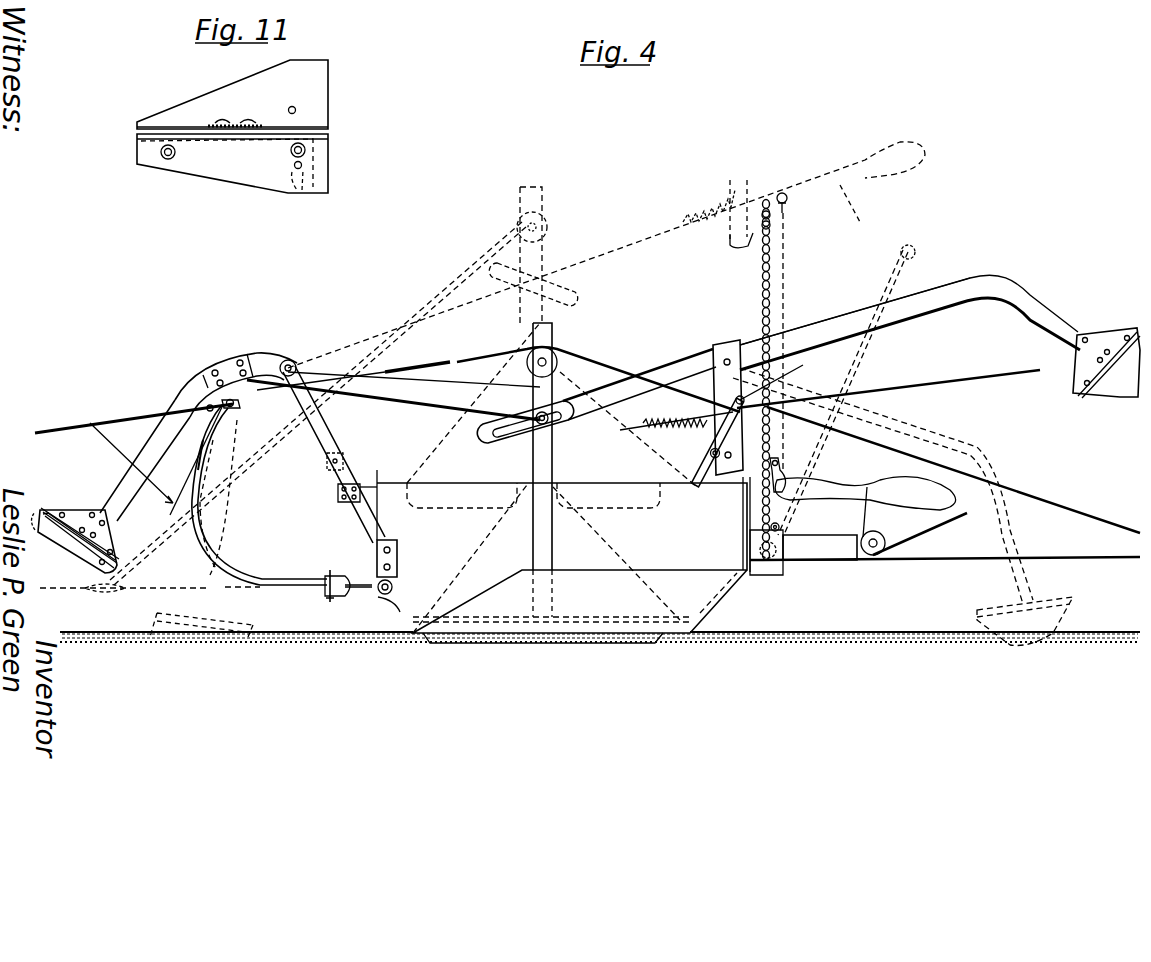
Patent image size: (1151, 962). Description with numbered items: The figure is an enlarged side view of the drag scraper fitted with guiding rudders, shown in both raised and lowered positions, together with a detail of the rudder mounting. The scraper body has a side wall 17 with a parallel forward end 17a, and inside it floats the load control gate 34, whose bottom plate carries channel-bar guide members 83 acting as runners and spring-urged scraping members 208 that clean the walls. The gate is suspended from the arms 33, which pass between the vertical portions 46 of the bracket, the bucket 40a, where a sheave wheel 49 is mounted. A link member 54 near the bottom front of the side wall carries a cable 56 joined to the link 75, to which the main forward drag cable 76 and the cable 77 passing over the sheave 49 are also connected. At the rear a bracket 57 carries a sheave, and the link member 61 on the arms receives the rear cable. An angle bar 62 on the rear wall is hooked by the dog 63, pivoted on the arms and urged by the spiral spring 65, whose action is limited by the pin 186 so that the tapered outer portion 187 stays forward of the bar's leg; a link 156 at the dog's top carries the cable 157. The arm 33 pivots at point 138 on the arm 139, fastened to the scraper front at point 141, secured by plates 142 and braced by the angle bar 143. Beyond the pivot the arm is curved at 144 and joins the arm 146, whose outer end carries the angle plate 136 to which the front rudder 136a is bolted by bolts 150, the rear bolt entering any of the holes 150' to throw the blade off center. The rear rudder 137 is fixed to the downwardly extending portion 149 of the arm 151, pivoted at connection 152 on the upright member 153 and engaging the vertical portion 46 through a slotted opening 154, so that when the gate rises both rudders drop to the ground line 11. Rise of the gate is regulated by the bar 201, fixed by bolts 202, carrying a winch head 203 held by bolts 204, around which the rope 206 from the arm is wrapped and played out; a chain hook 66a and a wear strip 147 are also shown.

In FIG. 4, the ground line 11 is at (90, 423).
In FIG. 4, the side wall 17 is at (598, 504).
In FIG. 4, the parallel forward end of side wall 17a is at (462, 498).
In FIG. 4, the arm 33 is at (480, 316).
In FIG. 4, the load control gate 34 is at (630, 558).
In FIG. 4, the bucket 40a is at (535, 410).
In FIG. 4, the vertical portion of bracket plates 46 is at (545, 188).
In FIG. 4, the sheave wheel 49 is at (548, 236).
In FIG. 4, the link member 54 is at (385, 600).
In FIG. 4, the cable 56 is at (195, 468).
In FIG. 4, the bracket 57 is at (785, 575).
In FIG. 4, the link member 61 is at (786, 193).
In FIG. 4, the angle bar 62 is at (712, 495).
In FIG. 4, the dog 63 is at (690, 140).
In FIG. 4, the spiral spring 65 is at (675, 413).
In FIG. 4, the chain hook 66a is at (762, 205).
In FIG. 4, the link 75 is at (224, 408).
In FIG. 4, the main forward drag cable 76 is at (60, 418).
In FIG. 4, the cable 77 is at (455, 280).
In FIG. 4, the guide members 83 is at (460, 643).
In FIG. 11, the angle plate 136 is at (328, 97).
In FIG. 4, the angle plate 136 is at (62, 512).
In FIG. 4, the front rudder 136a is at (157, 614).
In FIG. 4, the rear rudder 137 is at (1075, 395).
In FIG. 4, the pivotal point 138 is at (290, 360).
In FIG. 4, the arm 139 is at (310, 440).
In FIG. 4, the fastening point 141 is at (398, 548).
In FIG. 4, the plates 142 is at (362, 482).
In FIG. 4, the angle bar or brace 143 is at (340, 452).
In FIG. 4, the curved portion of arm 144 is at (272, 338).
In FIG. 11, the arm 146 is at (268, 118).
In FIG. 4, the arm 146 is at (185, 395).
In FIG. 11, the wear strip 147 is at (228, 126).
In FIG. 4, the wear strip 147 is at (92, 516).
In FIG. 4, the downwardly extending portion of arm 149 is at (1065, 300).
In FIG. 11, the bolts 150 is at (272, 175).
In FIG. 4, the bolts 150 is at (87, 505).
In FIG. 11, the series of holes 150' is at (303, 197).
In FIG. 4, the arm 151 is at (835, 320).
In FIG. 4, the pivotal connection 152 is at (700, 352).
In FIG. 4, the upright member 153 is at (724, 342).
In FIG. 4, the slotted opening 154 is at (575, 290).
In FIG. 4, the link 156 is at (780, 378).
In FIG. 4, the cable 157 is at (900, 385).
In FIG. 4, the pin 186 is at (715, 422).
In FIG. 4, the tapered outer portion 187 is at (802, 391).
In FIG. 4, the plate or bar 201 is at (820, 547).
In FIG. 4, the bolts or rivets 202 is at (770, 575).
In FIG. 4, the winch head or drum barrel 203 is at (880, 532).
In FIG. 4, the bolts 204 is at (878, 560).
In FIG. 4, the cable or rope 206 is at (864, 215).
In FIG. 4, the scraping members 208 is at (520, 617).